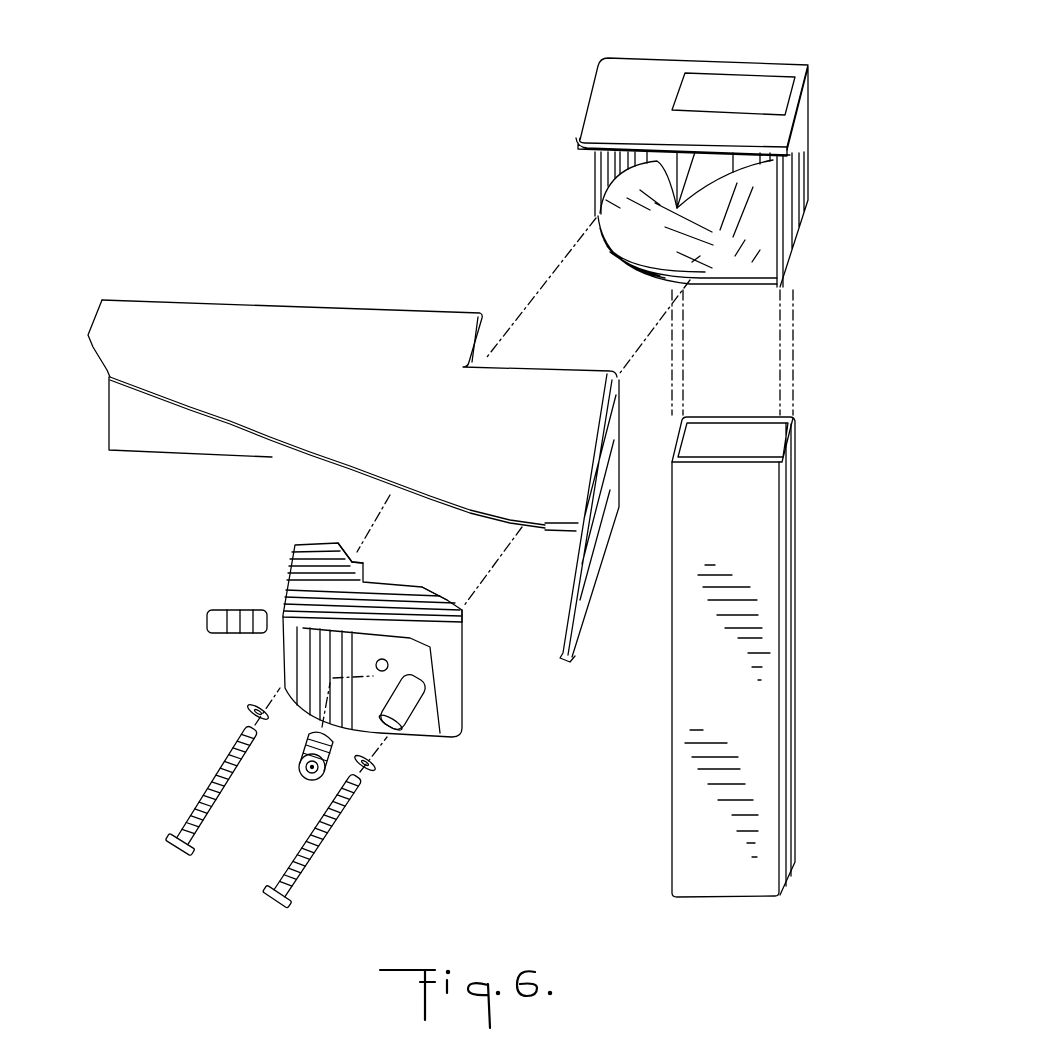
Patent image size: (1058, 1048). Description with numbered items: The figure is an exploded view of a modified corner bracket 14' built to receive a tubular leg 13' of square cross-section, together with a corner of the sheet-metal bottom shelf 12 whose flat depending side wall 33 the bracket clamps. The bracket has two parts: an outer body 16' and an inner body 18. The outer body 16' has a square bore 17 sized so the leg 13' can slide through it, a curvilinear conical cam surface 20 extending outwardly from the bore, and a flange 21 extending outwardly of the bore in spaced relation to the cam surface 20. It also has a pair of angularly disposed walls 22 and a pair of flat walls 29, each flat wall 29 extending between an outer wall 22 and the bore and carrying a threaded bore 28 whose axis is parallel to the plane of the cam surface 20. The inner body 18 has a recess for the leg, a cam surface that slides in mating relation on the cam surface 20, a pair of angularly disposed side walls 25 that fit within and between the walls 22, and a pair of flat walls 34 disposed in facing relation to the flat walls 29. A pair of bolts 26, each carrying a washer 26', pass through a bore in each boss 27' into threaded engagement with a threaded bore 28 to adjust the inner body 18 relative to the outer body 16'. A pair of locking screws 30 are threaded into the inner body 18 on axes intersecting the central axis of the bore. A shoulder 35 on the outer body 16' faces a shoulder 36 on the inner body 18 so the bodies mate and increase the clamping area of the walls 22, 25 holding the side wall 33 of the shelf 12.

The bottom shelf 12 is at (353, 453).
The tubular leg 13' is at (768, 657).
The corner bracket 14' is at (712, 173).
The outer body 16' is at (824, 177).
The bore 17 is at (760, 80).
The inner body 18 is at (373, 638).
The curvilinear conical cam surface 20 is at (757, 283).
The flange 21 is at (600, 113).
The angularly disposed walls 22 is at (600, 163).
The angularly disposed side walls 25 is at (310, 540).
The bolt 26 is at (261, 814).
The washer 26' is at (315, 766).
The boss 27' is at (326, 720).
The threaded bore 28 is at (763, 172).
The flat wall 29 is at (745, 192).
The locking screw 30 is at (215, 607).
The side wall 33 is at (150, 442).
The flat wall 34 is at (357, 555).
The shoulder 35 is at (758, 244).
The shoulder 36 is at (355, 550).